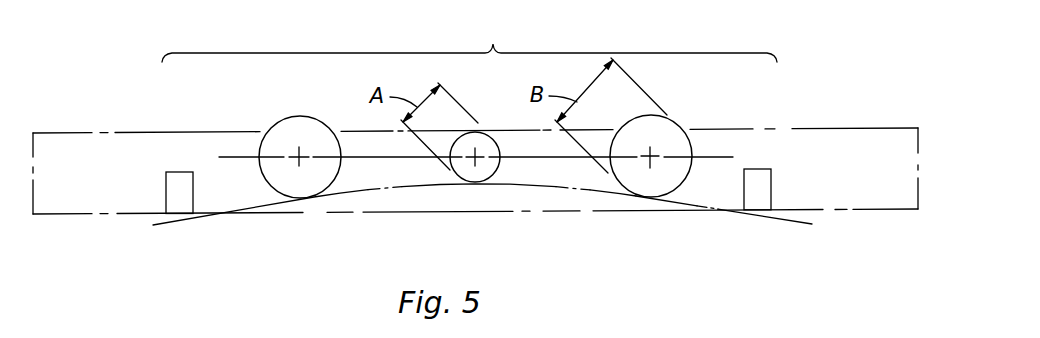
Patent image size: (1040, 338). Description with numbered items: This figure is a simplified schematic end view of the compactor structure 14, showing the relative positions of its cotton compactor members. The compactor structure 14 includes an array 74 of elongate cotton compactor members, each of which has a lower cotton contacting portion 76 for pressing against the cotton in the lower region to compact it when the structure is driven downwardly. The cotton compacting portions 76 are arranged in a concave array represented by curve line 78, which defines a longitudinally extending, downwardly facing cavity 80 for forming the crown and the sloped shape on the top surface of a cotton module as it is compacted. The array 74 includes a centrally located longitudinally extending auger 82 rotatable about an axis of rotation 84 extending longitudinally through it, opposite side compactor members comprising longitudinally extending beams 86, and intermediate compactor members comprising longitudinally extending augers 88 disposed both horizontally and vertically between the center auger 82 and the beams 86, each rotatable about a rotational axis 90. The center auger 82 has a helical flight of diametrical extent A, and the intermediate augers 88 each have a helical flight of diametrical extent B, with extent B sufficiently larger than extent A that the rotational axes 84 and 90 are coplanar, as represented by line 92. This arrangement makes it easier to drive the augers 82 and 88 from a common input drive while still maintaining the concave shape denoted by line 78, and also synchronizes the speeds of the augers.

The compactor structure 14 is at (918, 147).
The array of cotton compactor members 74 is at (469, 41).
The lower cotton contacting portion 76 is at (195, 214).
The curve line 78 is at (805, 226).
The cavity 80 is at (403, 193).
The center auger 82 is at (455, 183).
The axis of rotation 84 is at (477, 160).
The beams 86 is at (166, 182).
The intermediate augers 88 is at (287, 118).
The rotational axis 90 is at (296, 159).
The line 92 is at (722, 154).